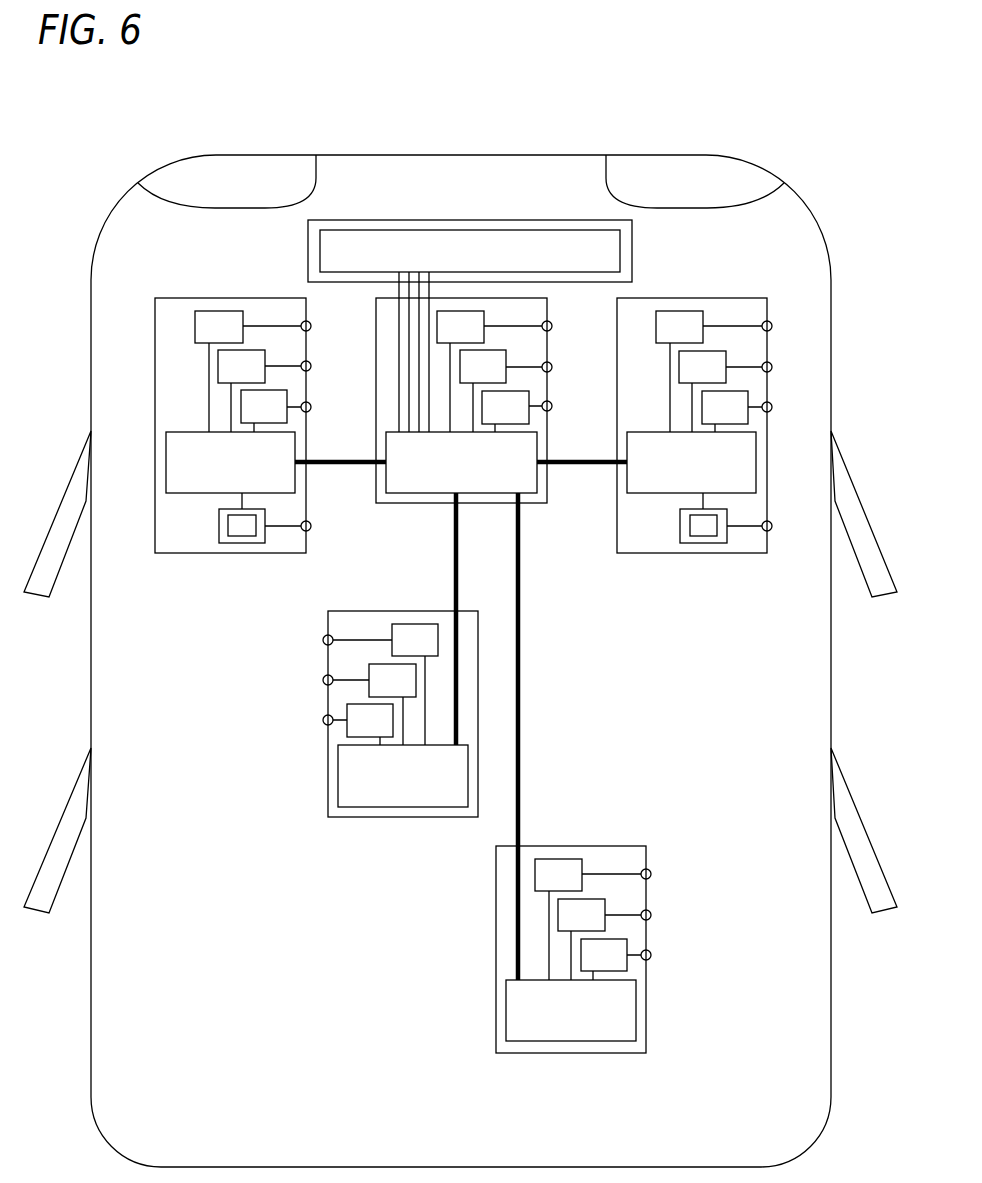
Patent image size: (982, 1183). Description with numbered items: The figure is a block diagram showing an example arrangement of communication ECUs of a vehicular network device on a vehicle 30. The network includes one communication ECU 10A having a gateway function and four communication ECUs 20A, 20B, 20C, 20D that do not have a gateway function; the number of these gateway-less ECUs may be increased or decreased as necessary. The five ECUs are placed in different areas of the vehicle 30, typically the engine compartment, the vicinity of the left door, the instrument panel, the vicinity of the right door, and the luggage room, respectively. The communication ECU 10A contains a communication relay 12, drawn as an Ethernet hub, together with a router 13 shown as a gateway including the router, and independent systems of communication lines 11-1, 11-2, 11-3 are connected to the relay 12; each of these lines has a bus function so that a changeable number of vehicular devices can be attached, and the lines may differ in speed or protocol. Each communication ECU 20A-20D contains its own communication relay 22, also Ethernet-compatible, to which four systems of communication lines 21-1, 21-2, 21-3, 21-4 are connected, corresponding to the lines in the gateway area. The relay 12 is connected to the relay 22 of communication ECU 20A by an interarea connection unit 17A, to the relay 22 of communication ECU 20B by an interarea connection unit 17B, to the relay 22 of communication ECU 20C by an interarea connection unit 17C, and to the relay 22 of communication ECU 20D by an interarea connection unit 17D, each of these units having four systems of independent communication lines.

The vehicle 30 is at (90, 694).
The router 13 is at (630, 251).
The communication ECU 10A is at (528, 505).
The communication relay 12 is at (421, 503).
The communication line 11-1 is at (571, 318).
The communication line 11-2 is at (571, 359).
The communication line 11-3 is at (571, 398).
The communication ECU 20A is at (205, 554).
The communication ECU 20B is at (667, 554).
The communication ECU 20C is at (326, 788).
The communication ECU 20D is at (494, 1022).
The communication relay 22 is at (204, 497).
The communication line 21-1 is at (330, 318).
The communication line 21-2 is at (330, 358).
The communication line 21-3 is at (330, 399).
The communication line 21-4 is at (330, 518).
The interarea connection unit 17A is at (327, 460).
The interarea connection unit 17B is at (584, 445).
The interarea connection unit 17C is at (452, 580).
The interarea connection unit 17D is at (523, 645).